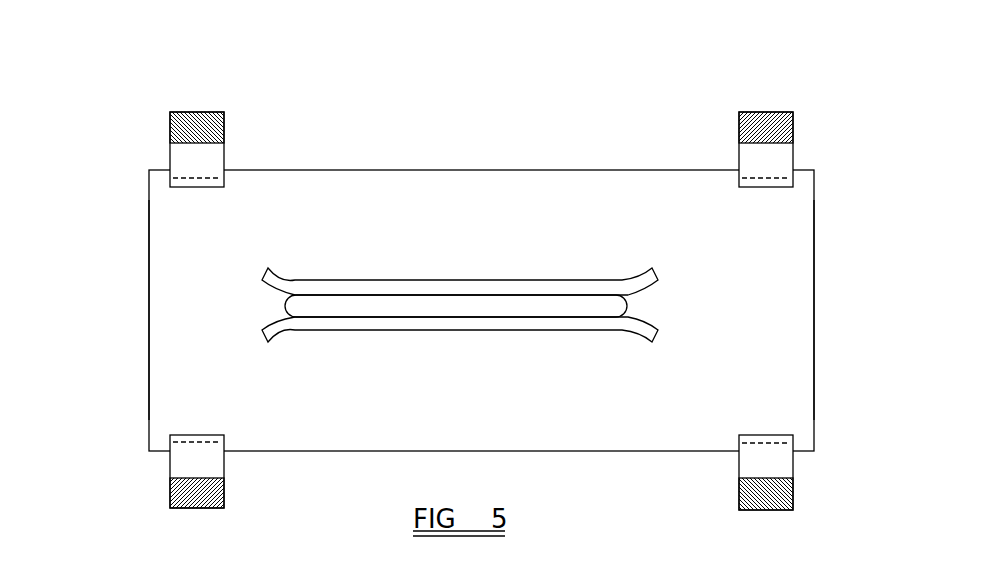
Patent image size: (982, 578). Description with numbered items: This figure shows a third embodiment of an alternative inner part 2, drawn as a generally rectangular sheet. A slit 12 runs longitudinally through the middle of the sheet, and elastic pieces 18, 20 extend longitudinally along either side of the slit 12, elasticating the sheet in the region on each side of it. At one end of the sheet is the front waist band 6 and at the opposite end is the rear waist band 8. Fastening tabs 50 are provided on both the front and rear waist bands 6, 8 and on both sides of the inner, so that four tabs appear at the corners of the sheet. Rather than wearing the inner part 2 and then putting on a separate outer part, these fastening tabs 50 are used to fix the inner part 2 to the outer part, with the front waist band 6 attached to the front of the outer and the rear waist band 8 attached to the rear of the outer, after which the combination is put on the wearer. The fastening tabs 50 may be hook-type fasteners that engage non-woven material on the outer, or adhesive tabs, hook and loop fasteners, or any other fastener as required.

The inner part 2 is at (409, 170).
The front waist band 6 is at (163, 282).
The rear waist band 8 is at (765, 285).
The slit 12 is at (552, 305).
The elastic piece 18 is at (560, 280).
The elastic piece 20 is at (368, 322).
The fastening tab 50 is at (170, 113).